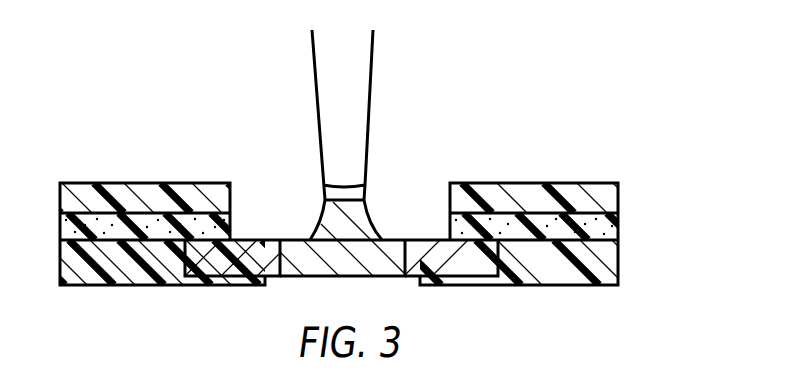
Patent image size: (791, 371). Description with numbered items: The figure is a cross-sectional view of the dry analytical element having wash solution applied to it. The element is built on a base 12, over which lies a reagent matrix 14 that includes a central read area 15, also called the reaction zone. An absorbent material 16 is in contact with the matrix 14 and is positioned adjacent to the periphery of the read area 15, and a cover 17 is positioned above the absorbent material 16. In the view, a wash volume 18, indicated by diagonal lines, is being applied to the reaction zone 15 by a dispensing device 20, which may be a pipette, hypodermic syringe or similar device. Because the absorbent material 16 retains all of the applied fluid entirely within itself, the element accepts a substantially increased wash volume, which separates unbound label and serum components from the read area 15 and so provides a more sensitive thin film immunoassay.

The base 12 is at (612, 276).
The reagent matrix 14 is at (263, 248).
The read area 15 is at (392, 238).
The absorbent material 16 is at (618, 227).
The cover 17 is at (517, 191).
The wash volume 18 is at (332, 220).
The dispensing device 20 is at (370, 92).